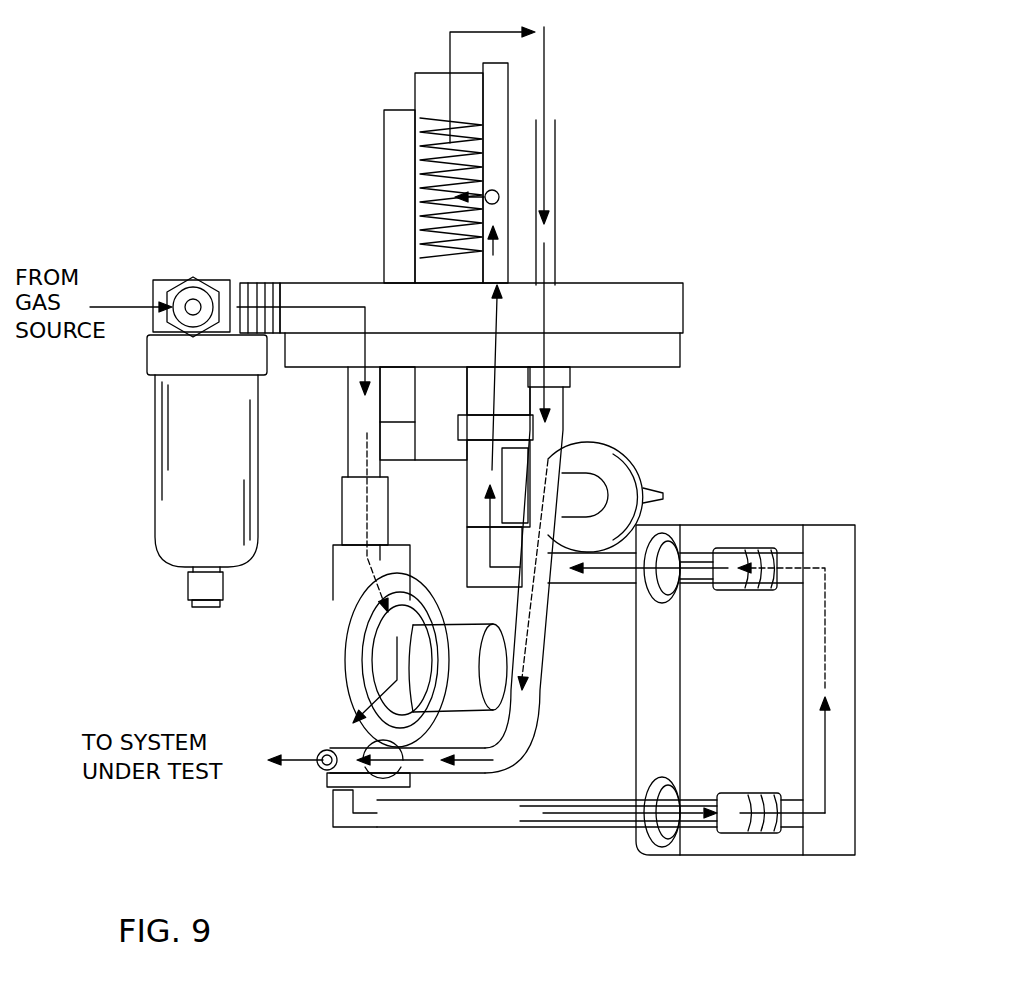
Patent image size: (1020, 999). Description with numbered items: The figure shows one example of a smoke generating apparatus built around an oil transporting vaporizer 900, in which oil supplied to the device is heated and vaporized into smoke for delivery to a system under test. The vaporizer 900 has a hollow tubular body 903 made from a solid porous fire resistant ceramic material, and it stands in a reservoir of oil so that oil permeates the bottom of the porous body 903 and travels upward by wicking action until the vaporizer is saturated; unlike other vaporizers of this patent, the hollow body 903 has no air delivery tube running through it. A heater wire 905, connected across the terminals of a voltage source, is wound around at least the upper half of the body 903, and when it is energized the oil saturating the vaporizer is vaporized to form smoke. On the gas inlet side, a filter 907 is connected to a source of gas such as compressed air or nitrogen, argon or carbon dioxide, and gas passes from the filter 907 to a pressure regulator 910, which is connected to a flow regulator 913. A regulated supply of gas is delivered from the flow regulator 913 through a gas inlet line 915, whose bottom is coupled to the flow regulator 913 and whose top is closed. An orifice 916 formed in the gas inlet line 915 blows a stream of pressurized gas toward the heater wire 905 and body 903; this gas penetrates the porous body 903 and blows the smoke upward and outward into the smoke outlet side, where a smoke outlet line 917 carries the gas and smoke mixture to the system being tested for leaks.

The oil transporting vaporizer 900 is at (442, 248).
The hollow tubular body 903 is at (420, 120).
The heater wire 905 is at (435, 175).
The filter 907 is at (183, 468).
The pressure regulator 910 is at (362, 675).
The flow regulator 913 is at (660, 738).
The gas inlet line 915 is at (493, 120).
The orifice 916 is at (499, 195).
The smoke outlet line 917 is at (553, 245).